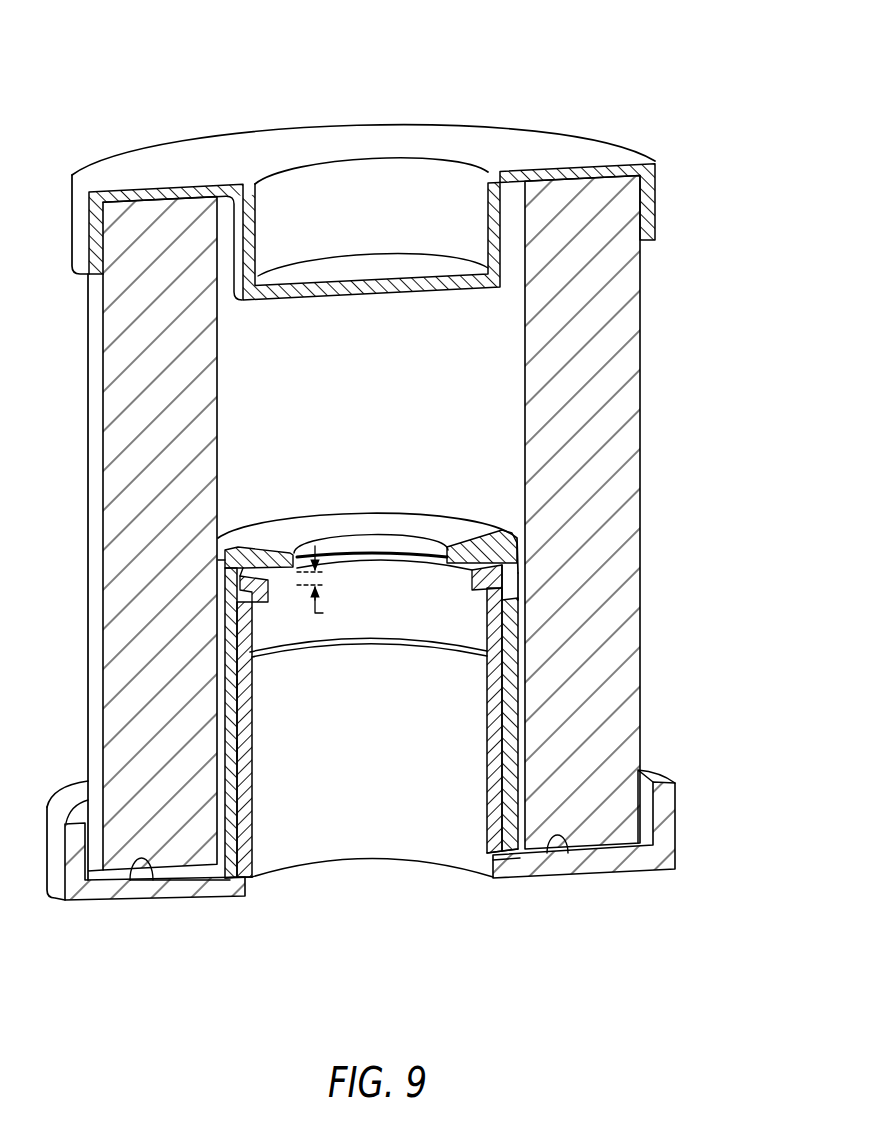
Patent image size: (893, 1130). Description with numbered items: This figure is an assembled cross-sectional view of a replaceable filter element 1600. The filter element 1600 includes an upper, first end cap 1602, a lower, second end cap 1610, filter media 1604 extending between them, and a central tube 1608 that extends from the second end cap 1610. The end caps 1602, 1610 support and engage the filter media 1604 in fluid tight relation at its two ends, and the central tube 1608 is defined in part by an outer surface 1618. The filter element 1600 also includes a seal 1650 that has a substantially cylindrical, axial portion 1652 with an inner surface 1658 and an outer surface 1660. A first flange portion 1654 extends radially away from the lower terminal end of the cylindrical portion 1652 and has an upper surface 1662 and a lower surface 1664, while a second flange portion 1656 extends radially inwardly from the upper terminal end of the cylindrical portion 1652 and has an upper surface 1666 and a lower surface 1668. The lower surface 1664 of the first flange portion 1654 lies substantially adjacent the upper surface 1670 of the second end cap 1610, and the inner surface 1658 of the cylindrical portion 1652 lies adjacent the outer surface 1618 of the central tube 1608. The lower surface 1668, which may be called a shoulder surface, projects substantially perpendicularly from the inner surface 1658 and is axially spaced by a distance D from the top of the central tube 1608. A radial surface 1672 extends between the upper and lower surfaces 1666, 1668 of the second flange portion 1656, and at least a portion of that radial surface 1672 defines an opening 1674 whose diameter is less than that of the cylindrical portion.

The filter element 1600 is at (397, 482).
The first end cap 1602 is at (417, 212).
The filter media 1604 is at (419, 528).
The central tube 1608 is at (598, 709).
The second end cap 1610 is at (413, 835).
The outer surface 1618 is at (126, 726).
The seal 1650 is at (362, 657).
The substantially cylindrical axial portion 1652 is at (133, 739).
The first flange portion 1654 is at (122, 813).
The second flange portion 1656 is at (120, 536).
The inner surface 1658 is at (126, 662).
The outer surface 1660 is at (126, 723).
The upper surface 1662 is at (599, 877).
The lower surface 1664 is at (496, 889).
The upper surface 1666 is at (139, 505).
The lower surface 1668 is at (472, 586).
The upper surface 1670 is at (104, 906).
The radial surface 1672 is at (461, 532).
The opening 1674 is at (385, 507).